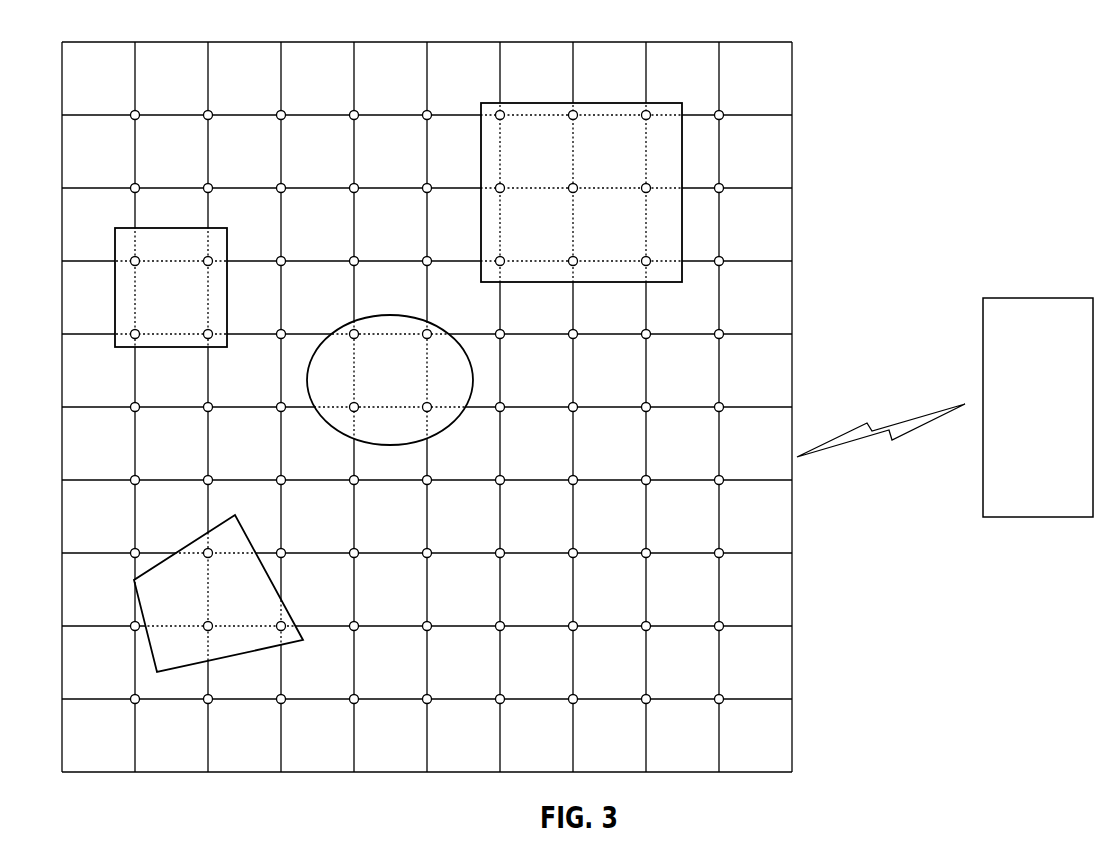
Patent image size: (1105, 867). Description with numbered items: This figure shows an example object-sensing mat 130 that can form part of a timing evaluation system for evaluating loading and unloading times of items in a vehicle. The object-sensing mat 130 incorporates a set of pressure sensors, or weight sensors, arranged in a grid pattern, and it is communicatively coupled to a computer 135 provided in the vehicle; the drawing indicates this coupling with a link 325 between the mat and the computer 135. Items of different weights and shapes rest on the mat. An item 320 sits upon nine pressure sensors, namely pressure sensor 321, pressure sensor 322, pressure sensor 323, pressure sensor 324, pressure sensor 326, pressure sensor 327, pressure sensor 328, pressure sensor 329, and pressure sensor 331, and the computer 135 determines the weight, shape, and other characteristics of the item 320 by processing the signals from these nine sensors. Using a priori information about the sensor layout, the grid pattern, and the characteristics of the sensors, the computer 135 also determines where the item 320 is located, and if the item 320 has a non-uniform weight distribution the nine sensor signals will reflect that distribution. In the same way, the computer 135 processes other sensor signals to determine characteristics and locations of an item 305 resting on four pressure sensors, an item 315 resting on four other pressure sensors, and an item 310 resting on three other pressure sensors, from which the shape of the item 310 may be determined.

The object-sensing mat 130 is at (792, 287).
The computer 135 is at (1064, 420).
The item 305 is at (192, 310).
The item 310 is at (199, 611).
The item 315 is at (409, 387).
The item 320 is at (560, 168).
The pressure sensor 321 is at (501, 104).
The pressure sensor 322 is at (574, 104).
The pressure sensor 323 is at (647, 104).
The pressure sensor 324 is at (500, 192).
The wireless link 325 is at (889, 424).
The pressure sensor 326 is at (573, 192).
The pressure sensor 327 is at (643, 185).
The pressure sensor 328 is at (500, 265).
The pressure sensor 329 is at (573, 265).
The pressure sensor 331 is at (646, 265).